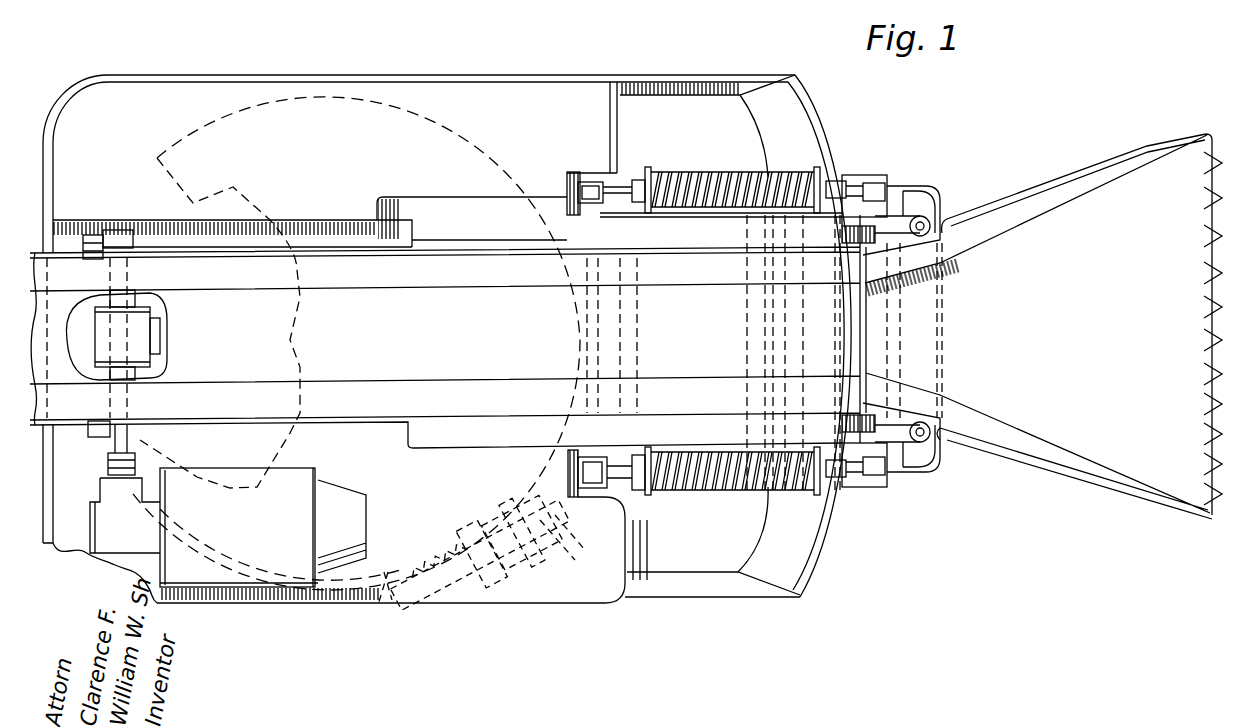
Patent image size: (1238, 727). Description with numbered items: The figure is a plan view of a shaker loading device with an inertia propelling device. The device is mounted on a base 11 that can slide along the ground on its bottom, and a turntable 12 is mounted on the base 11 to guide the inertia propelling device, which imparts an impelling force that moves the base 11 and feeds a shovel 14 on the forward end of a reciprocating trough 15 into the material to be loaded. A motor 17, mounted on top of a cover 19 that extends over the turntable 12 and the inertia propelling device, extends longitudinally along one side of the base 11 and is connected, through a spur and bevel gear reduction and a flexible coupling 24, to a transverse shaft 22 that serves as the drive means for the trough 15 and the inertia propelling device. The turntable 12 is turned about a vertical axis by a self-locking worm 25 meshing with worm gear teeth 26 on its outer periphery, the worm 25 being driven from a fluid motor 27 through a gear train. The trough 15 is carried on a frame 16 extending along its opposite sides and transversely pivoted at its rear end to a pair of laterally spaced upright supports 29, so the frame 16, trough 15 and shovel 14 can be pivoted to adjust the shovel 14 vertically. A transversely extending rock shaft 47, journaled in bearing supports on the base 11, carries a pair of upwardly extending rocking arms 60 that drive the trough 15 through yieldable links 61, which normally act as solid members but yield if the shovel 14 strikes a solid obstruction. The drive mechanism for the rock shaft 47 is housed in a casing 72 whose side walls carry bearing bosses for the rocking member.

The base 11 is at (822, 560).
The turntable 12 is at (470, 132).
The shovel 14 is at (1036, 186).
The reciprocating trough 15 is at (455, 255).
The frame 16 is at (375, 428).
The motor 17 is at (196, 590).
The cover 19 is at (540, 603).
The transverse shaft 22 is at (108, 450).
The flexible coupling 24 is at (100, 478).
The worm 25 is at (432, 580).
The worm gear teeth 26 is at (385, 578).
The motor 27 is at (553, 568).
The upright supports 29 is at (88, 234).
The rock shaft 47 is at (575, 256).
The rocking arms 60 is at (612, 178).
The yieldable links 61 is at (705, 172).
The casing 72 is at (605, 130).